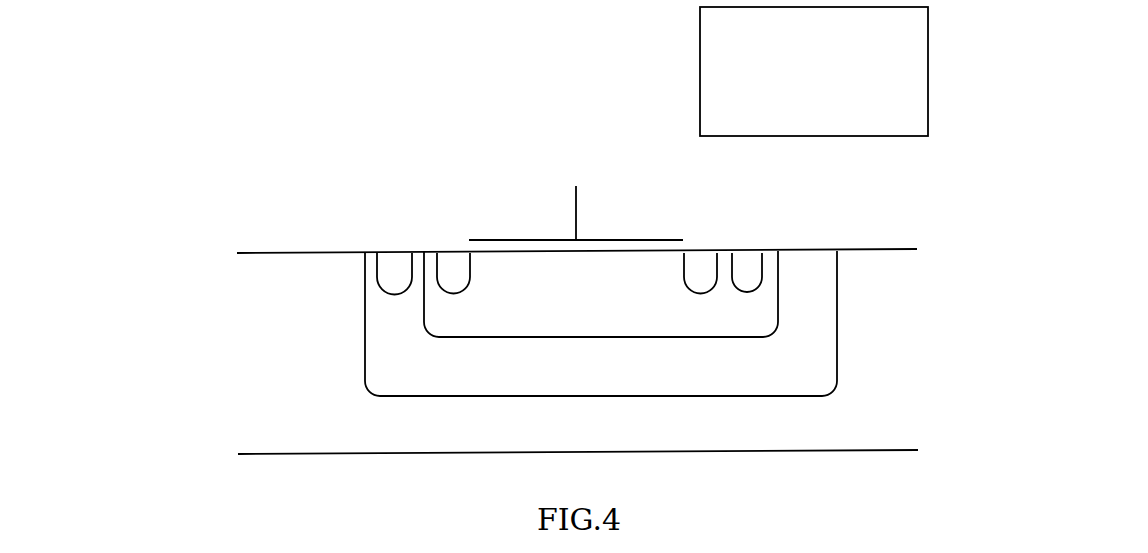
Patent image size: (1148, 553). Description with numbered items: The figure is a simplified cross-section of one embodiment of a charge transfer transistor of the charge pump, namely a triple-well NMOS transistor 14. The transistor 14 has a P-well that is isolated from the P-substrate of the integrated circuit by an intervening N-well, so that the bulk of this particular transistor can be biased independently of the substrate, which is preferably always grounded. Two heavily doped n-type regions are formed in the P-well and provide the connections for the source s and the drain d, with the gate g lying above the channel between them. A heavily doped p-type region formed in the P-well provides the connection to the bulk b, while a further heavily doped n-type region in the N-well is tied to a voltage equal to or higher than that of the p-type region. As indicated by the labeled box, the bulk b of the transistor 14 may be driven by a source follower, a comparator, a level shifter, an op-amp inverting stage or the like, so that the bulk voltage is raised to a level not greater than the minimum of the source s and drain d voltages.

The triple-well NMOS transistor 14 is at (582, 230).
The source s is at (452, 252).
The gate g is at (576, 213).
The drain d is at (699, 251).
The bulk b is at (790, 137).